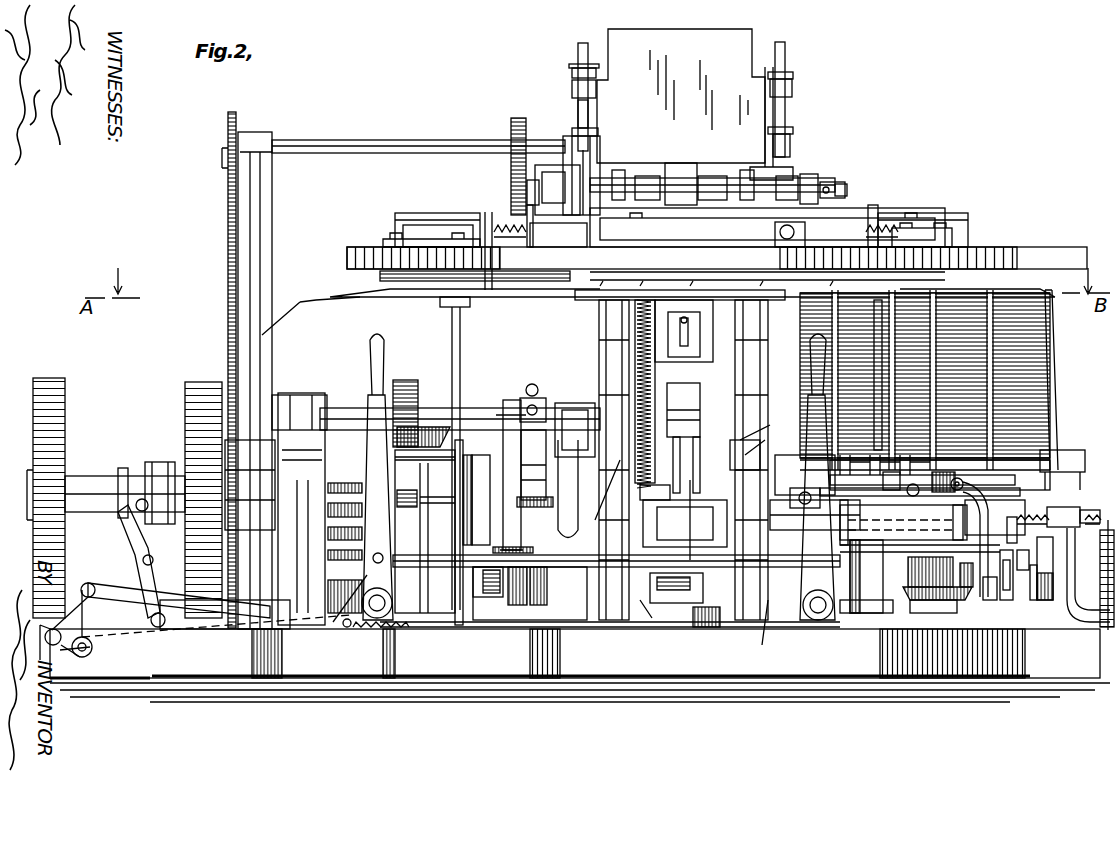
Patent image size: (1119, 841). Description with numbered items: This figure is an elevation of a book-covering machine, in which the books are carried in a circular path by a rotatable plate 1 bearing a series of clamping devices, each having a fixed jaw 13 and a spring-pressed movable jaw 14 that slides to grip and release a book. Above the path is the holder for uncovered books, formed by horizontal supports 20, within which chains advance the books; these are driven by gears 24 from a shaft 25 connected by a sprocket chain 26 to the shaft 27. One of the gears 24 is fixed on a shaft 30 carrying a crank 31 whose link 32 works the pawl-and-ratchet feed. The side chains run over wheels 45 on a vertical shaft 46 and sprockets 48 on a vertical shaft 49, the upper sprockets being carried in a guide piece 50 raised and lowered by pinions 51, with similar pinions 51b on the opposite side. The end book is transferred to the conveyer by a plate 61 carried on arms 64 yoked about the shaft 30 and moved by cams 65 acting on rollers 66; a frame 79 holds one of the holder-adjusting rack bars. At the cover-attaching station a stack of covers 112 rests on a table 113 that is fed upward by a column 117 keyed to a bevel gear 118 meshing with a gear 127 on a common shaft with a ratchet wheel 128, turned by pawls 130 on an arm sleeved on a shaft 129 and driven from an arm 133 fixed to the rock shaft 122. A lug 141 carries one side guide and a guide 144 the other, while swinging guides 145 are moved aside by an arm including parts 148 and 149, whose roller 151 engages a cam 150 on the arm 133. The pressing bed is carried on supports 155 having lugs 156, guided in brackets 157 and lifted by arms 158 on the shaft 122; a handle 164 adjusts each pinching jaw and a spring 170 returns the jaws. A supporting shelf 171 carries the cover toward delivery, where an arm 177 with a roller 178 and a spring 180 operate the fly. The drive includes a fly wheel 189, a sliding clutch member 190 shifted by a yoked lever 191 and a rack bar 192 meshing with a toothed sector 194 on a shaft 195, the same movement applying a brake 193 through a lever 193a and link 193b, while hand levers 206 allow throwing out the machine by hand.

The plate 1 is at (692, 250).
The jaw 13 is at (412, 215).
The jaw 14 is at (485, 212).
The supports 20 is at (678, 176).
The gears 24 is at (511, 178).
The shaft 25 is at (352, 143).
The sprocket chain 26 is at (238, 252).
The shaft 27 is at (350, 470).
The shaft 30 is at (790, 176).
The crank 31 is at (834, 185).
The link 32 is at (847, 190).
The wheels 45 is at (570, 68).
The vertical shaft 46 is at (578, 52).
The sprockets 48 is at (793, 75).
The vertical shaft 49 is at (787, 50).
The guide piece 50 is at (596, 72).
The pinions 51 is at (570, 88).
The pinions 51b is at (793, 92).
The plate 61 is at (681, 96).
The arms 64 is at (788, 222).
The cams 65 is at (527, 205).
The rollers 66 is at (552, 180).
The frame 79 is at (681, 184).
The stack of covers 112 is at (1020, 298).
The table 113 is at (1065, 452).
The column 117 is at (960, 478).
The bevel gear 118 is at (915, 590).
The shaft 122 is at (785, 520).
The gear 127 is at (988, 600).
The ratchet wheel 128 is at (1043, 600).
The shaft 129 is at (545, 598).
The pawls 130 is at (1053, 548).
The arm 133 is at (1017, 530).
The lug 141 is at (1065, 507).
The guide 144 is at (1054, 360).
The guides 145 is at (880, 300).
The arm part 148 is at (990, 532).
The arm part 149 is at (1006, 600).
The cam 150 is at (1018, 600).
The roller 151 is at (1029, 565).
The supports 155 is at (600, 355).
The lugs 156 is at (745, 455).
The brackets 157 is at (632, 598).
The arms 158 is at (707, 547).
The handle 164 is at (690, 333).
The spring 170 is at (632, 308).
The supporting shelf 171 is at (422, 298).
The arm 177 is at (508, 425).
The roller 178 is at (542, 438).
The spring 180 is at (532, 384).
The fly wheel 189 is at (66, 425).
The sliding clutch member 190 is at (160, 462).
The yoked lever 191 is at (152, 528).
The sliding rack bar 192 is at (210, 630).
The brake 193 is at (60, 650).
The lever 193a is at (95, 627).
The link 193b is at (150, 630).
The toothed sector 194 is at (380, 605).
The shaft 195 is at (368, 630).
The hand levers 206 is at (372, 360).